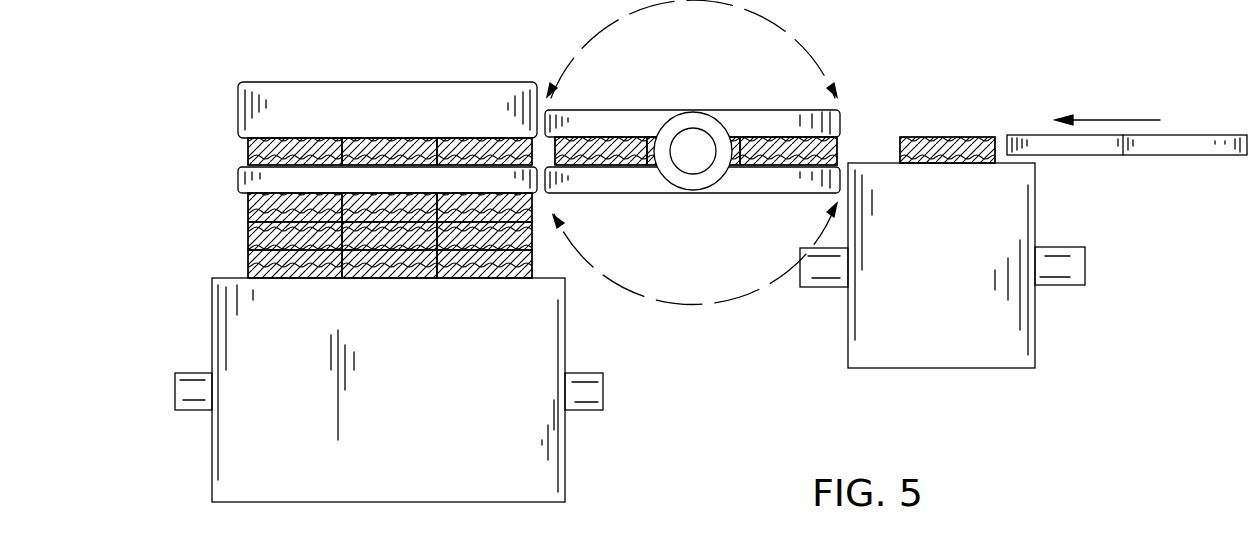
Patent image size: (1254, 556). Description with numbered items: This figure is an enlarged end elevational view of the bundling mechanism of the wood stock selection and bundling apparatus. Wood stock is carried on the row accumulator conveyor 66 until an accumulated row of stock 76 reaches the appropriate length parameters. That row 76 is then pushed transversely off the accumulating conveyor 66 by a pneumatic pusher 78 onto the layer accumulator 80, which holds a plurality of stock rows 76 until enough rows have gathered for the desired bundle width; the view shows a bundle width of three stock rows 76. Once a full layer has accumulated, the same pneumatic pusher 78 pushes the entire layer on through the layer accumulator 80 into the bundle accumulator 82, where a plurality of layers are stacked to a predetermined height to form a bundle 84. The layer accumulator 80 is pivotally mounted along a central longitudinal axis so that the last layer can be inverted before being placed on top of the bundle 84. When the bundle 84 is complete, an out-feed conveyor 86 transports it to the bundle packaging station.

The row accumulator conveyor 66 is at (1013, 203).
The accumulated row of stock 76 is at (472, 280).
The pneumatic pusher 78 is at (1190, 137).
The layer accumulator 80 is at (712, 266).
The bundle accumulator 82 is at (201, 116).
The bundle 84 is at (240, 234).
The out-feed conveyor 86 is at (532, 477).